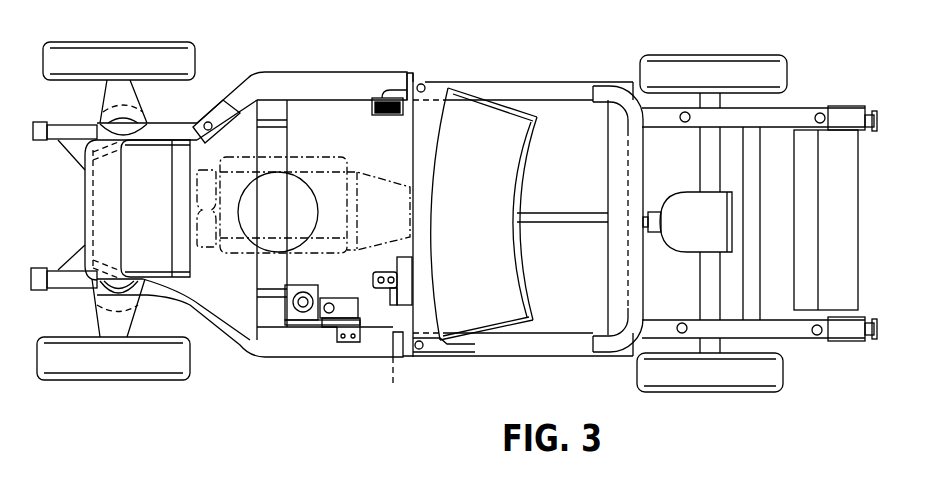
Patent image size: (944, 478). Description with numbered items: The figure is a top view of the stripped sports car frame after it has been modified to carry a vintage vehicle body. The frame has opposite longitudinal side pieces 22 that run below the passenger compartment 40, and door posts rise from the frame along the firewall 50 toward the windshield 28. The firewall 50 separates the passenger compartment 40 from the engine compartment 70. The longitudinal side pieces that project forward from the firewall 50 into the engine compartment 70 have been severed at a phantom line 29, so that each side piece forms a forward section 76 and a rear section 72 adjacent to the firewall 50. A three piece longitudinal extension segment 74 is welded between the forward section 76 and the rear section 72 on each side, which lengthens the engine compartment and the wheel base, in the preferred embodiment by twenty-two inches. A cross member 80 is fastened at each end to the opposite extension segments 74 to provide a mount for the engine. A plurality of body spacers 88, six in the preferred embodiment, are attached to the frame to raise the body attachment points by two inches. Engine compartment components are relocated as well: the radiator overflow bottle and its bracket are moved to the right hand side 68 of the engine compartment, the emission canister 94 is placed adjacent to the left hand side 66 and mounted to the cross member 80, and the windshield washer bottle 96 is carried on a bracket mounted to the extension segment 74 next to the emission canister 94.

The longitudinal side pieces 22 is at (563, 92).
The windshield 28 is at (517, 152).
The phantom line 29 is at (393, 383).
The passenger compartment 40 is at (583, 197).
The firewall 50 is at (413, 133).
The left hand side 66 is at (268, 358).
The right hand side 68 is at (307, 72).
The engine compartment 70 is at (401, 172).
The rear section 72 is at (421, 84).
The three piece longitudinal extension segments 74 is at (343, 82).
The forward section 76 is at (247, 90).
The cross member 80 is at (277, 150).
The body spacers 88 is at (426, 88).
The emission canister 94 is at (295, 325).
The windshield washer bottle 96 is at (352, 343).